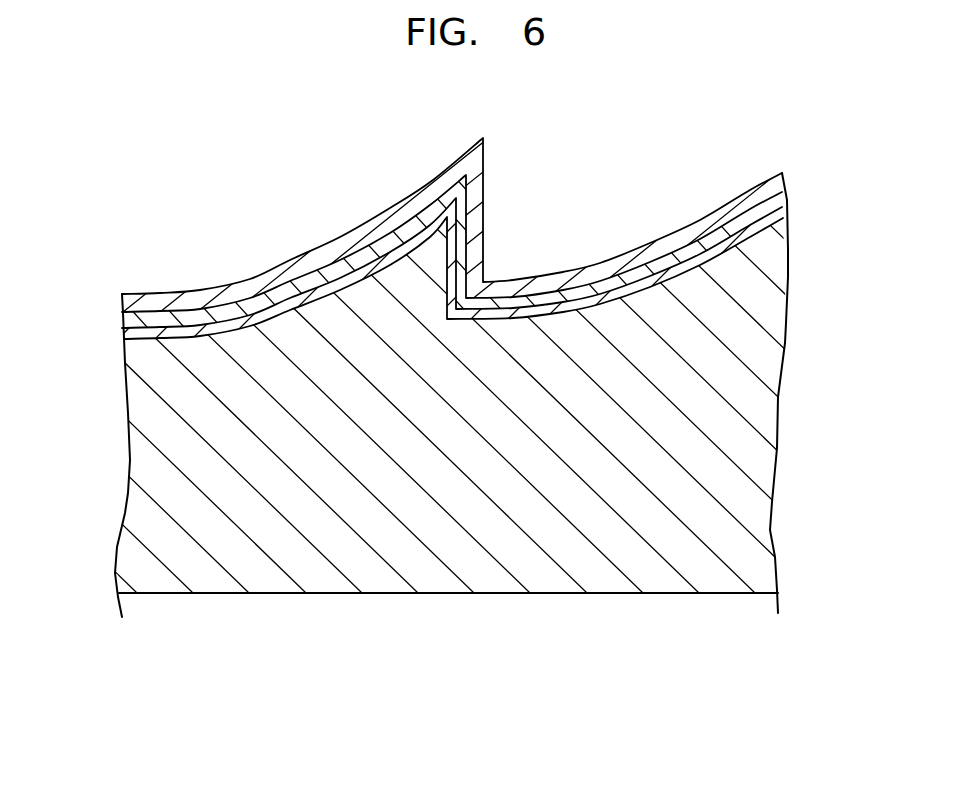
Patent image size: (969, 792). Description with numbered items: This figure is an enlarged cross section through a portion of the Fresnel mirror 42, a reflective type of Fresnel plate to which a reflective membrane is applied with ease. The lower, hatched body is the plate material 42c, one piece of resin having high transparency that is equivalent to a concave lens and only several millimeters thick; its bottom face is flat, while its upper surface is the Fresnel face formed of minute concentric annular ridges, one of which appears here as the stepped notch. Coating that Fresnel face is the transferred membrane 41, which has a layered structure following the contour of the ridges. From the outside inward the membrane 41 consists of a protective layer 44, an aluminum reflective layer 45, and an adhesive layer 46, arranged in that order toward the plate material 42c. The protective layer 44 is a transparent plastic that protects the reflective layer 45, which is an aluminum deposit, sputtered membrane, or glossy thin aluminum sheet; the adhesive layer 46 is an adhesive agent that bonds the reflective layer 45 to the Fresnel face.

The transferred membrane 41 is at (484, 229).
The Fresnel mirror 42 is at (484, 419).
The plate material 42c is at (143, 458).
The protective layer 44 is at (782, 176).
The aluminum reflective layer 45 is at (124, 321).
The adhesive layer 46 is at (785, 207).